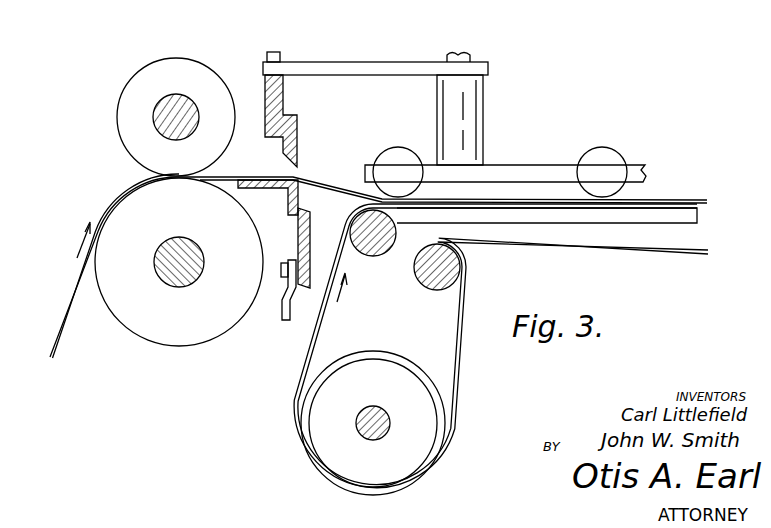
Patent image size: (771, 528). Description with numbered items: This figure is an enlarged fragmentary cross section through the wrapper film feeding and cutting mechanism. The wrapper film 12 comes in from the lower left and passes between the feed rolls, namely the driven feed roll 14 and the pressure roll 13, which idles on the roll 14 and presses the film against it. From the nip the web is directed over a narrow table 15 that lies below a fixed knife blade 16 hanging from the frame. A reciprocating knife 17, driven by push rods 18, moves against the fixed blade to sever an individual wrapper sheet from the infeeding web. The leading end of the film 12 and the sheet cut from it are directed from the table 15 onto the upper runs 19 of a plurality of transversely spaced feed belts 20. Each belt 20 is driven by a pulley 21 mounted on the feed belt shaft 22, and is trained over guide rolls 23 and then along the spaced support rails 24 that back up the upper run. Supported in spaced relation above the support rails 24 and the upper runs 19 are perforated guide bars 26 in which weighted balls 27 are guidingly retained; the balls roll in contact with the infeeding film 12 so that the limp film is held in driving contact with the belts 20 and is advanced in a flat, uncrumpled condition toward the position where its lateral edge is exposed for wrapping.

The film 12 is at (73, 306).
The pressure roll 13 is at (148, 77).
The feed roll 14 is at (157, 328).
The table 15 is at (279, 189).
The fixed knife blade 16 is at (298, 136).
The reciprocating knife 17 is at (311, 233).
The push rod 18 is at (287, 315).
The upper run 19 is at (668, 199).
The feed belt 20 is at (320, 335).
The pulley 21 is at (400, 371).
The feed belt shaft 22 is at (392, 427).
The guide roll 23 is at (421, 272).
The support rail 24 is at (698, 214).
The perforated guide bar 26 is at (532, 170).
The weighted ball 27 is at (611, 157).